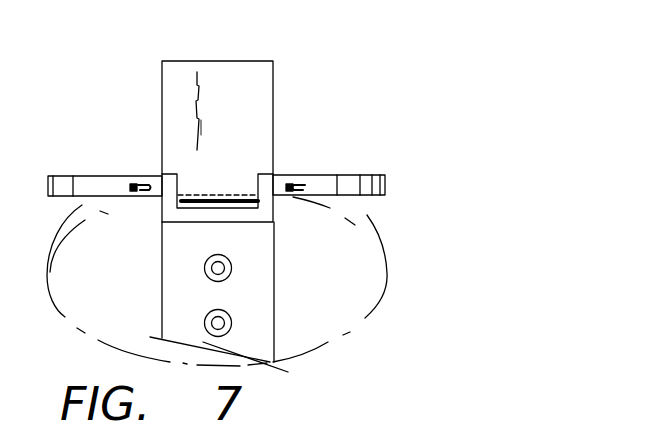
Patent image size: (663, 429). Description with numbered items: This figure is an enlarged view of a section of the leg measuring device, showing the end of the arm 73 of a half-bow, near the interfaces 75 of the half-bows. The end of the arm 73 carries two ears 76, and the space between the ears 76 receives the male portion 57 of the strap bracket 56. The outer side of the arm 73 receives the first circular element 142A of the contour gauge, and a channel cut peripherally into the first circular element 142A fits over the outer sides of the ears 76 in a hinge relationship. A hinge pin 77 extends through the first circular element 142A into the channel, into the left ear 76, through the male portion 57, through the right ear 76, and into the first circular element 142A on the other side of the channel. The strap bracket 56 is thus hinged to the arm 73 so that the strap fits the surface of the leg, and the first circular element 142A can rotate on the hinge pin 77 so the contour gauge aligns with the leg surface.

The strap bracket 56 is at (162, 138).
The male portion 57 is at (220, 197).
The arm 73 is at (275, 212).
The interfaces of half-bows 75 is at (277, 341).
The ears 76 is at (148, 200).
The hinge pin 77 is at (133, 176).
The first circular element 142A is at (357, 175).